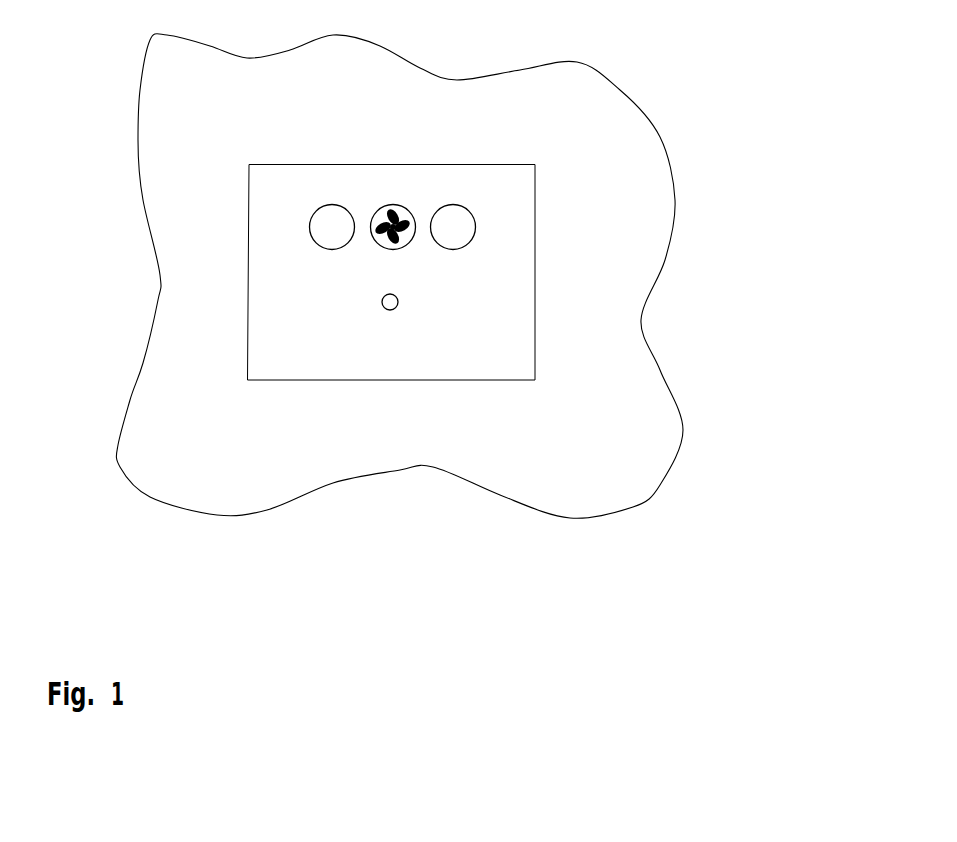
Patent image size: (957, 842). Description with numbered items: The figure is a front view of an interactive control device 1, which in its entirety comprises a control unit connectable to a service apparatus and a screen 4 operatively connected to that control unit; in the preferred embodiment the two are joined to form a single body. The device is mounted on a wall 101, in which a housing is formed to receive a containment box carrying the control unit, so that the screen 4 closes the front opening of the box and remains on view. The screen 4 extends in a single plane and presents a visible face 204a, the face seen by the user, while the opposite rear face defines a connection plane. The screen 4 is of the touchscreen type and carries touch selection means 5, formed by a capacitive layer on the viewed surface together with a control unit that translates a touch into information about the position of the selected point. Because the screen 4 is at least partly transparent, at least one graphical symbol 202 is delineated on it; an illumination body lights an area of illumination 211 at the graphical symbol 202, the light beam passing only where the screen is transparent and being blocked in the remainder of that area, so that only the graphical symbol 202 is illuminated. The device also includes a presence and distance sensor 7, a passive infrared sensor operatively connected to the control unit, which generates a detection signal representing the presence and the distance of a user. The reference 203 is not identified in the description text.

The interactive control device 1 is at (568, 305).
The wall 101 is at (662, 198).
The screen 4 is at (316, 407).
The visible face 204a is at (258, 352).
The panel bottom edge / frame 203 is at (514, 391).
The touch selection means 5 is at (382, 367).
The presence and distance sensor 7 is at (396, 308).
The graphical symbol 202 is at (388, 212).
The area of illumination 211 is at (475, 203).